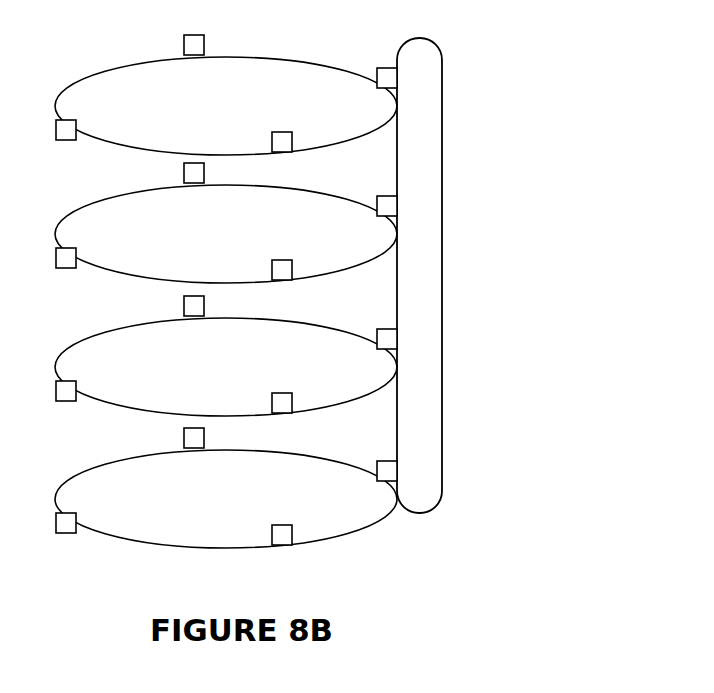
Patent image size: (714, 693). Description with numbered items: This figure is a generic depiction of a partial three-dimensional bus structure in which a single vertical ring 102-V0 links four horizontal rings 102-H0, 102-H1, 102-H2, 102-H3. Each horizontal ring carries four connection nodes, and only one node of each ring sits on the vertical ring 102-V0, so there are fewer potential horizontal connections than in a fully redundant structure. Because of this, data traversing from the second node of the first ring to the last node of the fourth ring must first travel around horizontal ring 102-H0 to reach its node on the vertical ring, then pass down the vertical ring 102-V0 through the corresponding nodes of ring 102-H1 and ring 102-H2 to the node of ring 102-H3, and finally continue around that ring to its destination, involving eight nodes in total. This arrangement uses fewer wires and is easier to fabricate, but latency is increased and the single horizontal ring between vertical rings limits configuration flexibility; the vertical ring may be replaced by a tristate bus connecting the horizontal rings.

The vertical ring 102-V0 is at (430, 50).
The horizontal ring 102-H0 is at (112, 72).
The horizontal ring 102-H1 is at (140, 199).
The horizontal ring 102-H2 is at (140, 332).
The horizontal ring 102-H3 is at (140, 464).